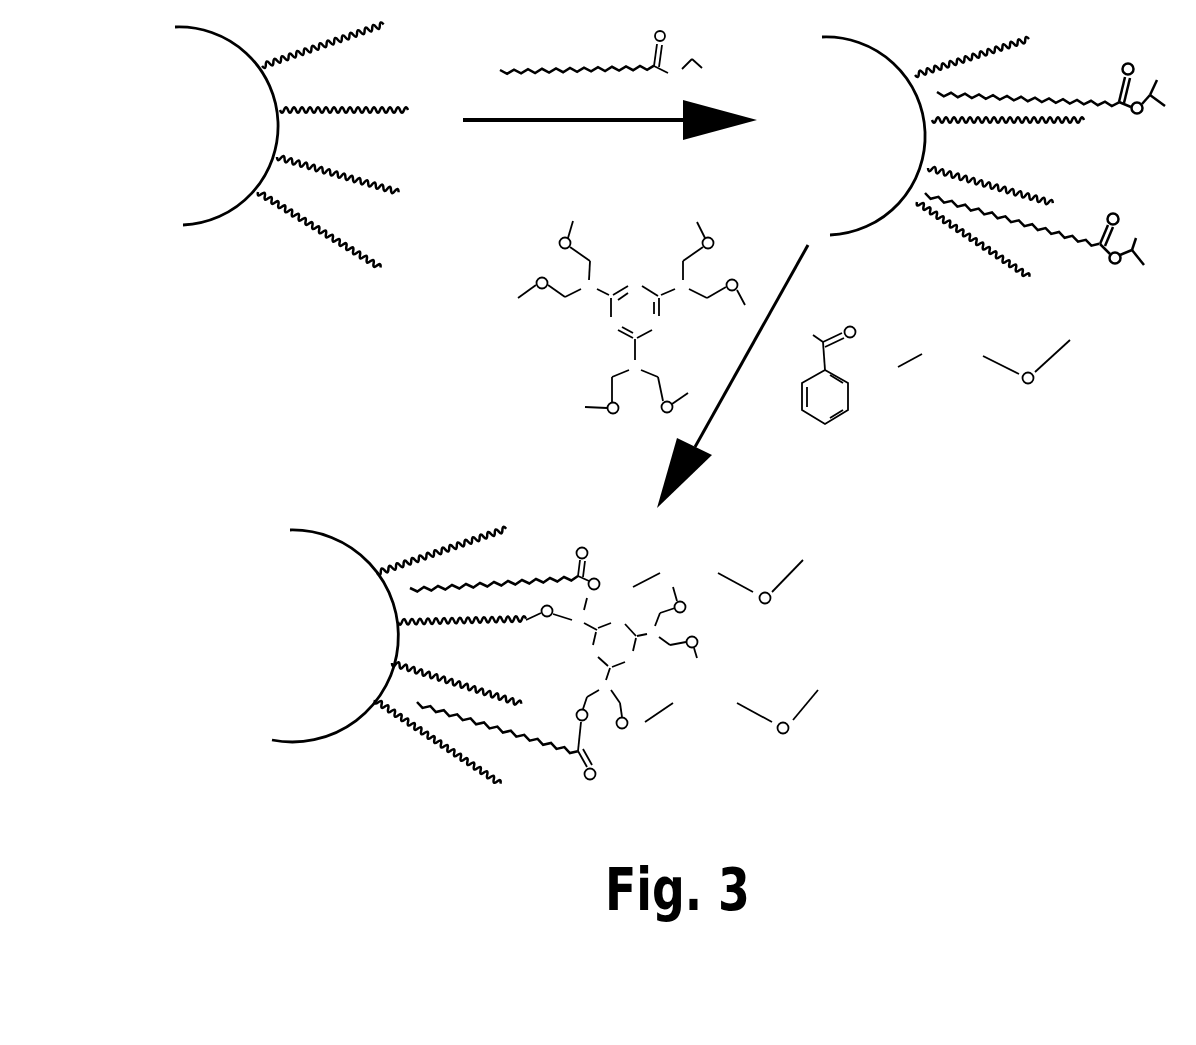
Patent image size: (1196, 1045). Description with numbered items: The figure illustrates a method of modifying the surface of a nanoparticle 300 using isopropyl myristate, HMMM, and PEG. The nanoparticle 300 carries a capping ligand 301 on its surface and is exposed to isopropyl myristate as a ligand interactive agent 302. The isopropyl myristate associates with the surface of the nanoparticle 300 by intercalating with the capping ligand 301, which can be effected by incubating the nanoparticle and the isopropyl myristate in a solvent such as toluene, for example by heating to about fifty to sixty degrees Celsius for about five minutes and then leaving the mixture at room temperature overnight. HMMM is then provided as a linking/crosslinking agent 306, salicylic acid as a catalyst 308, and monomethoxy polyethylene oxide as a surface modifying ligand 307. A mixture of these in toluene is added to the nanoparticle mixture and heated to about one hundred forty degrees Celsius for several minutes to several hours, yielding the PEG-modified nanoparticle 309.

The nanoparticle 300 is at (291, 147).
The capping ligand 301 is at (357, 72).
The ligand interactive agent 302 is at (609, 85).
The linking/crosslinking agent 306 is at (631, 338).
The surface modifying ligand 307 is at (968, 375).
The catalyst 308 is at (818, 392).
The PEG-modified nanoparticle 309 is at (925, 625).